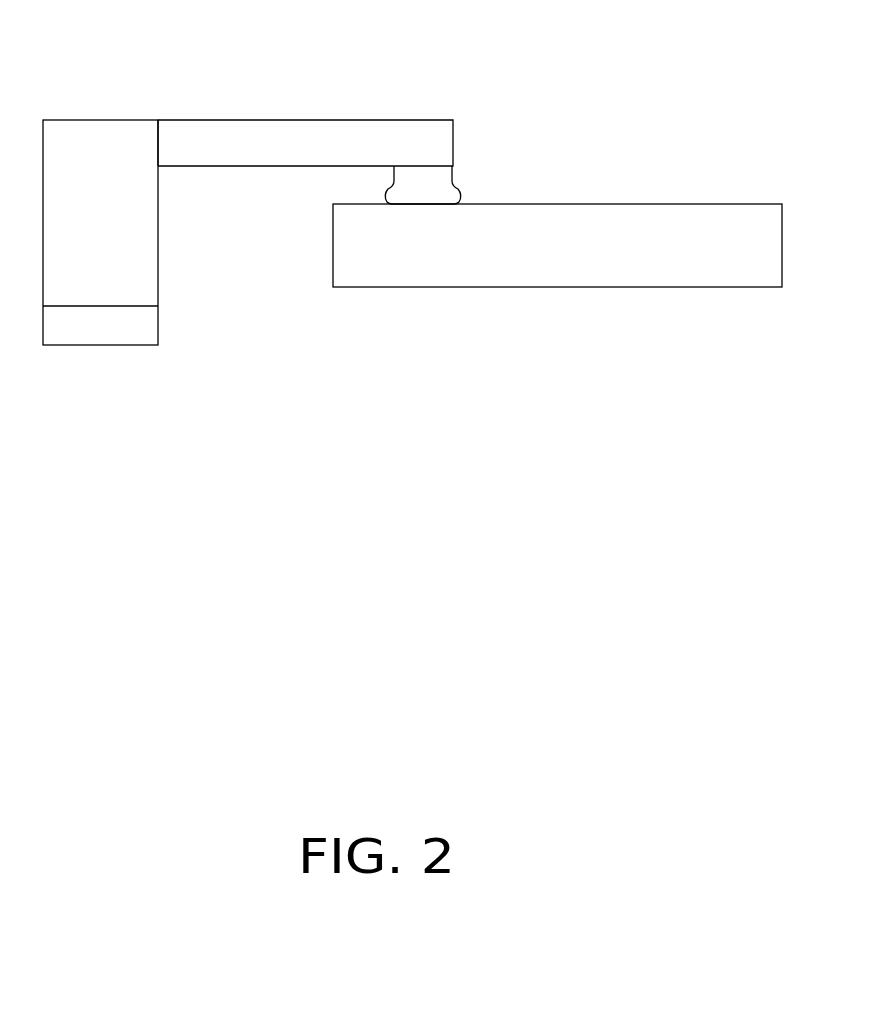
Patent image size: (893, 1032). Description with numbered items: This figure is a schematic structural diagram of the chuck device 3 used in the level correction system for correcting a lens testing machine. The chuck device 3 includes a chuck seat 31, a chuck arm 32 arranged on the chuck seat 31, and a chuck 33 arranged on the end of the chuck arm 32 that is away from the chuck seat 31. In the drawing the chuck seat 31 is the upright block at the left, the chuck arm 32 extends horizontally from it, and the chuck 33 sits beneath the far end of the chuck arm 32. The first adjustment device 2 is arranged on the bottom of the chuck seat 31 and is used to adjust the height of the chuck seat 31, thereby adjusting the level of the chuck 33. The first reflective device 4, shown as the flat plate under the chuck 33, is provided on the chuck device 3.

The first adjustment device 2 is at (113, 333).
The chuck device 3 is at (293, 110).
The chuck seat 31 is at (125, 156).
The chuck arm 32 is at (305, 138).
The chuck 33 is at (405, 138).
The first reflective device 4 is at (585, 232).